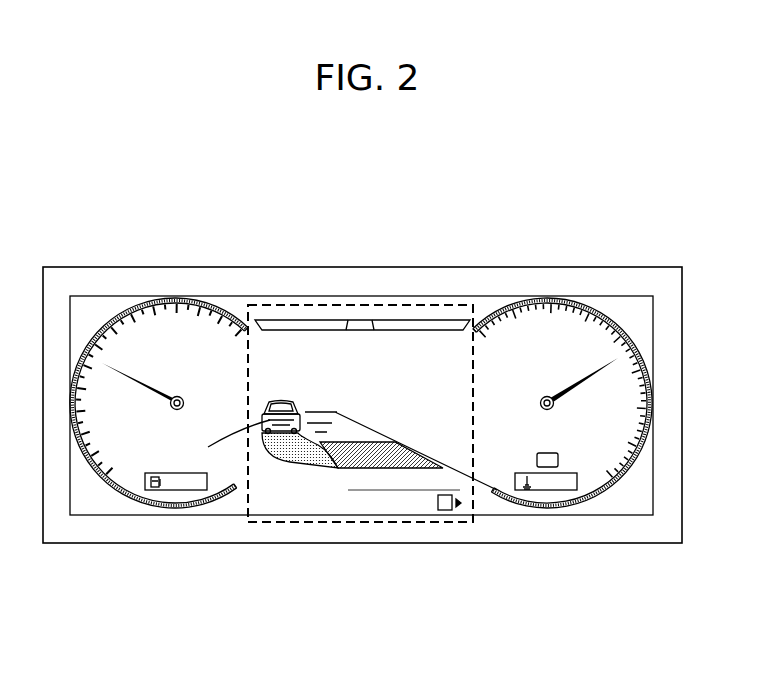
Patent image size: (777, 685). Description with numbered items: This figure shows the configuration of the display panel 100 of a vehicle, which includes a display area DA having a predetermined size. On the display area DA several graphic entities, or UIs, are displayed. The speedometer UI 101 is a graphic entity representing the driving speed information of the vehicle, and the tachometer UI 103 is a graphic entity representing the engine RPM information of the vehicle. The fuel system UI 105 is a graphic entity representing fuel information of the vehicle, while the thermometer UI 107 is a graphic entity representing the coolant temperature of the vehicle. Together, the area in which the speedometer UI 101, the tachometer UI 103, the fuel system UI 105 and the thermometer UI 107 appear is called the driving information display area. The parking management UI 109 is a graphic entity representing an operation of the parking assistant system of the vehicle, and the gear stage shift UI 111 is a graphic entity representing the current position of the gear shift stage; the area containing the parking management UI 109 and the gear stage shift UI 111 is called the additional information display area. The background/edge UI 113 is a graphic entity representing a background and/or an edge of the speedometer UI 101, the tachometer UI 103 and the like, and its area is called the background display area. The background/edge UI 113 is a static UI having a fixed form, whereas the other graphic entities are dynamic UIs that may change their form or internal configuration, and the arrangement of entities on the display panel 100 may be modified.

The display panel 100 is at (614, 267).
The speedometer UI 101 is at (159, 361).
The tachometer UI 103 is at (508, 310).
The fuel system UI 105 is at (170, 490).
The thermometer UI 107 is at (545, 489).
The parking management UI 109 is at (387, 523).
The gear stage shift UI 111 is at (537, 460).
The background/edge UI 113 is at (120, 308).
The display area DA is at (392, 303).